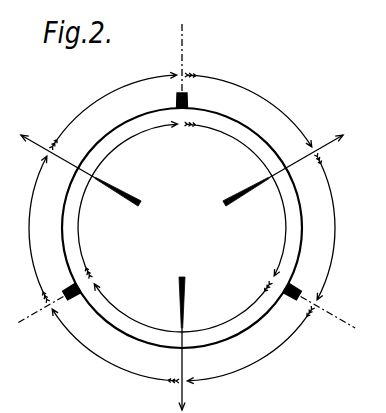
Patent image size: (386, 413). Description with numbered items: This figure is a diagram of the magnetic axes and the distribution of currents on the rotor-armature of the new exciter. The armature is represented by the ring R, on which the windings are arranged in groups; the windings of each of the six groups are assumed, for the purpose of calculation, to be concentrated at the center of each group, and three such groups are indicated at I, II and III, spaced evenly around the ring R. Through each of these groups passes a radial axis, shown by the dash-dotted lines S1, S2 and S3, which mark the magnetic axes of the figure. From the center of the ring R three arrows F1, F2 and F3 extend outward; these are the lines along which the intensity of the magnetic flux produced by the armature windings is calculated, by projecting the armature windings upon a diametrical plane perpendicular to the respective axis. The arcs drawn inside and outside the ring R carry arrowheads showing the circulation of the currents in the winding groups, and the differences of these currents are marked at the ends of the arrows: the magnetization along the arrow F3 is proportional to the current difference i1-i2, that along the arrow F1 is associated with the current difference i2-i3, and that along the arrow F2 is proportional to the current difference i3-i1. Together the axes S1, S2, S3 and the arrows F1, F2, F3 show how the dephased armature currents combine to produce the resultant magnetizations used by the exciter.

The ring (stator core) R is at (182, 228).
The first winding coil I is at (68, 287).
The second winding coil II is at (189, 100).
The third winding coil III is at (289, 302).
The axis of first winding S1 is at (40, 325).
The axis of second winding S2 is at (193, 56).
The axis of third winding S3 is at (332, 326).
The magnetic axis F1 is at (283, 170).
The magnetic axis F2 is at (171, 343).
The magnetic axis F3 is at (81, 170).
The current difference i1-i2 is at (27, 132).
The current difference i2-i3 is at (318, 136).
The current difference i3-i1 is at (184, 400).